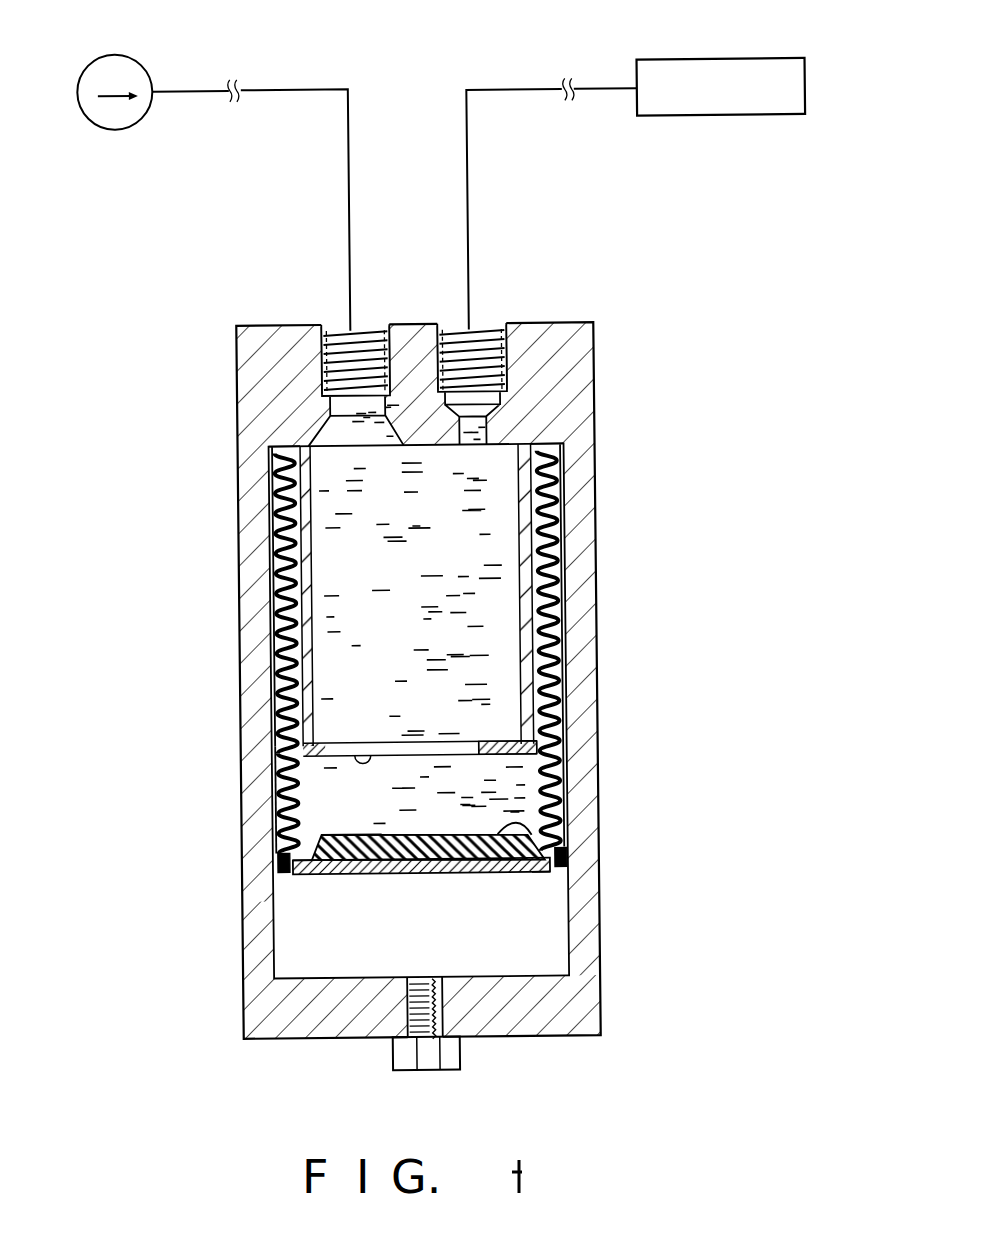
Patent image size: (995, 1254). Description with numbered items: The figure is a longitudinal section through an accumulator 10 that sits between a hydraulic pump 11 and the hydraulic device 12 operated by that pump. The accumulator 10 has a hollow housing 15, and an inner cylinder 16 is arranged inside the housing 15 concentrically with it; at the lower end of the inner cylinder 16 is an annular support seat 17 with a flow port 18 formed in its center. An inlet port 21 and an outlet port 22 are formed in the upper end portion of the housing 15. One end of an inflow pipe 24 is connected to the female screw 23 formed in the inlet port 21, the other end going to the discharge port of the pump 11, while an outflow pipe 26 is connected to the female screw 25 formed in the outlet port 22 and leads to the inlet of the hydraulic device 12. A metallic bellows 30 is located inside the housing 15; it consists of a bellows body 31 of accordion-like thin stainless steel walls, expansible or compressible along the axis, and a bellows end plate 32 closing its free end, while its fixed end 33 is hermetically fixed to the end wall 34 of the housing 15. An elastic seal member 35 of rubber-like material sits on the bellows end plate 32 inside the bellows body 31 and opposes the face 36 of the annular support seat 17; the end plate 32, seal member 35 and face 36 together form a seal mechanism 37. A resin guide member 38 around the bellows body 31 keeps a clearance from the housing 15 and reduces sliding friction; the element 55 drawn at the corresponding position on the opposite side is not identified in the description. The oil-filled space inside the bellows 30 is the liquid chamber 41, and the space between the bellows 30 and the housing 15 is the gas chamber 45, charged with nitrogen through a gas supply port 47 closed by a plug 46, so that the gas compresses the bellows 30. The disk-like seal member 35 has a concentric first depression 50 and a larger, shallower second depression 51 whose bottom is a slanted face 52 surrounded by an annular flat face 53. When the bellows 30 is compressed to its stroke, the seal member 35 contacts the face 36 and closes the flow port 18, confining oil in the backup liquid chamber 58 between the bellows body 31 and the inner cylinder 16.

The accumulator 10 is at (450, 697).
The hydraulic pump 11 is at (156, 73).
The hydraulic device 12 is at (743, 63).
The hollow housing 15 is at (590, 652).
The inner cylinder 16 is at (551, 560).
The annular support seat 17 is at (539, 743).
The flow port 18 is at (448, 745).
The inlet port 21 is at (336, 324).
The outlet port 22 is at (501, 324).
The female screw 23 is at (389, 377).
The inflow pipe 24 is at (354, 147).
The outlet port threads 25 is at (451, 344).
The outflow pipe 26 is at (475, 149).
The metallic bellows 30 is at (283, 601).
The bellows body 31 is at (273, 544).
The bellows end plate 32 is at (469, 905).
The fixed end 33 is at (272, 454).
The end wall 34 is at (253, 408).
The elastic seal member 35 is at (518, 876).
The face 36 is at (373, 748).
The seal mechanism 37 is at (313, 878).
The guide member 38 is at (274, 868).
The liquid chamber 41 is at (279, 776).
The gas chamber 45 is at (484, 977).
The plug 46 is at (389, 1059).
The gas supply port 47 is at (401, 1072).
The first depression 50 is at (428, 810).
The second depression 51 is at (407, 831).
The slanted face 52 is at (365, 834).
The annular flat face 53 is at (337, 834).
The right seal block 55 is at (555, 808).
The backup liquid chamber 58 is at (555, 521).